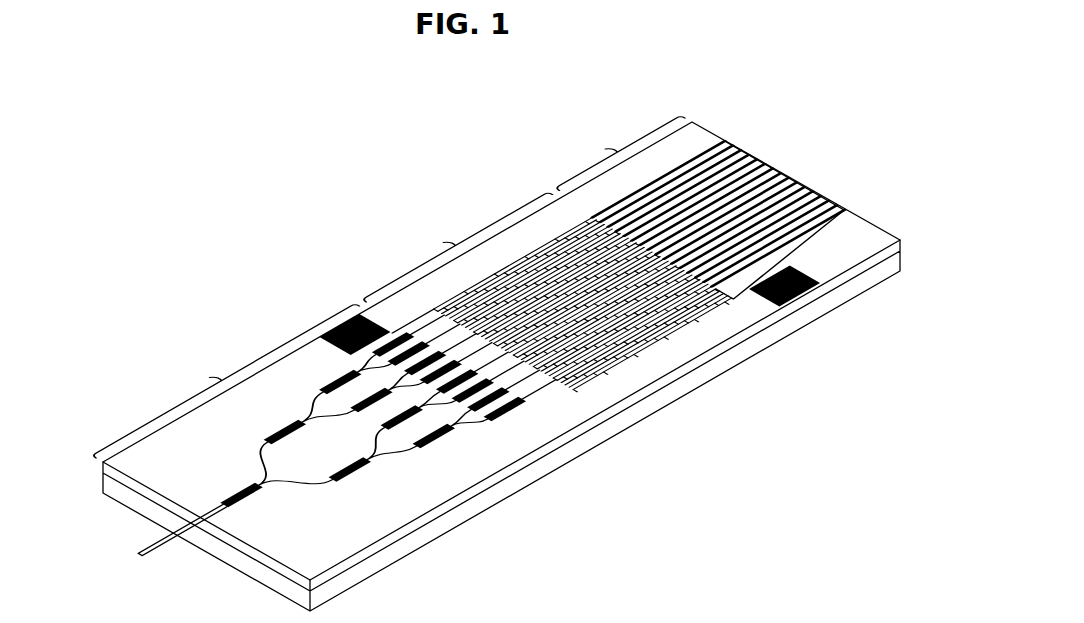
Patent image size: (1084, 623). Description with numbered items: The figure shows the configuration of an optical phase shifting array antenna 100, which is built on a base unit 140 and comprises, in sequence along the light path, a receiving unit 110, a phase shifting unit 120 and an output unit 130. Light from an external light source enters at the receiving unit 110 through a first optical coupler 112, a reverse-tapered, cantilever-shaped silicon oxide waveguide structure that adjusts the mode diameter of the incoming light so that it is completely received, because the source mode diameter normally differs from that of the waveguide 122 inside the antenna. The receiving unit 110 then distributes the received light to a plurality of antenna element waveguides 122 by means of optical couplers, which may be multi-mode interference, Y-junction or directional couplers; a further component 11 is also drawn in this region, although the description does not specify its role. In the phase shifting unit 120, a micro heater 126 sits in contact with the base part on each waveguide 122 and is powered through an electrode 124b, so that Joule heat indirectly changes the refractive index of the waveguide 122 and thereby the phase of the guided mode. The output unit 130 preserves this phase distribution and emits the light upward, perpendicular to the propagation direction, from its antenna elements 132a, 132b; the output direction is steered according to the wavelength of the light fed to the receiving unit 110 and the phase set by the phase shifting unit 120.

The optical phase shifting array antenna 100 is at (292, 148).
The receiving unit 110 is at (221, 379).
The first optical coupler 112 is at (203, 530).
The optical coupler of splitter 11 is at (353, 473).
The phase shifting unit 120 is at (445, 271).
The waveguide 122 is at (620, 343).
The electrode 124b is at (808, 290).
The micro heater 126 is at (527, 252).
The output unit 130 is at (691, 199).
The antenna element 132a is at (847, 207).
The antenna element 132b is at (840, 200).
The base unit 140 is at (155, 477).